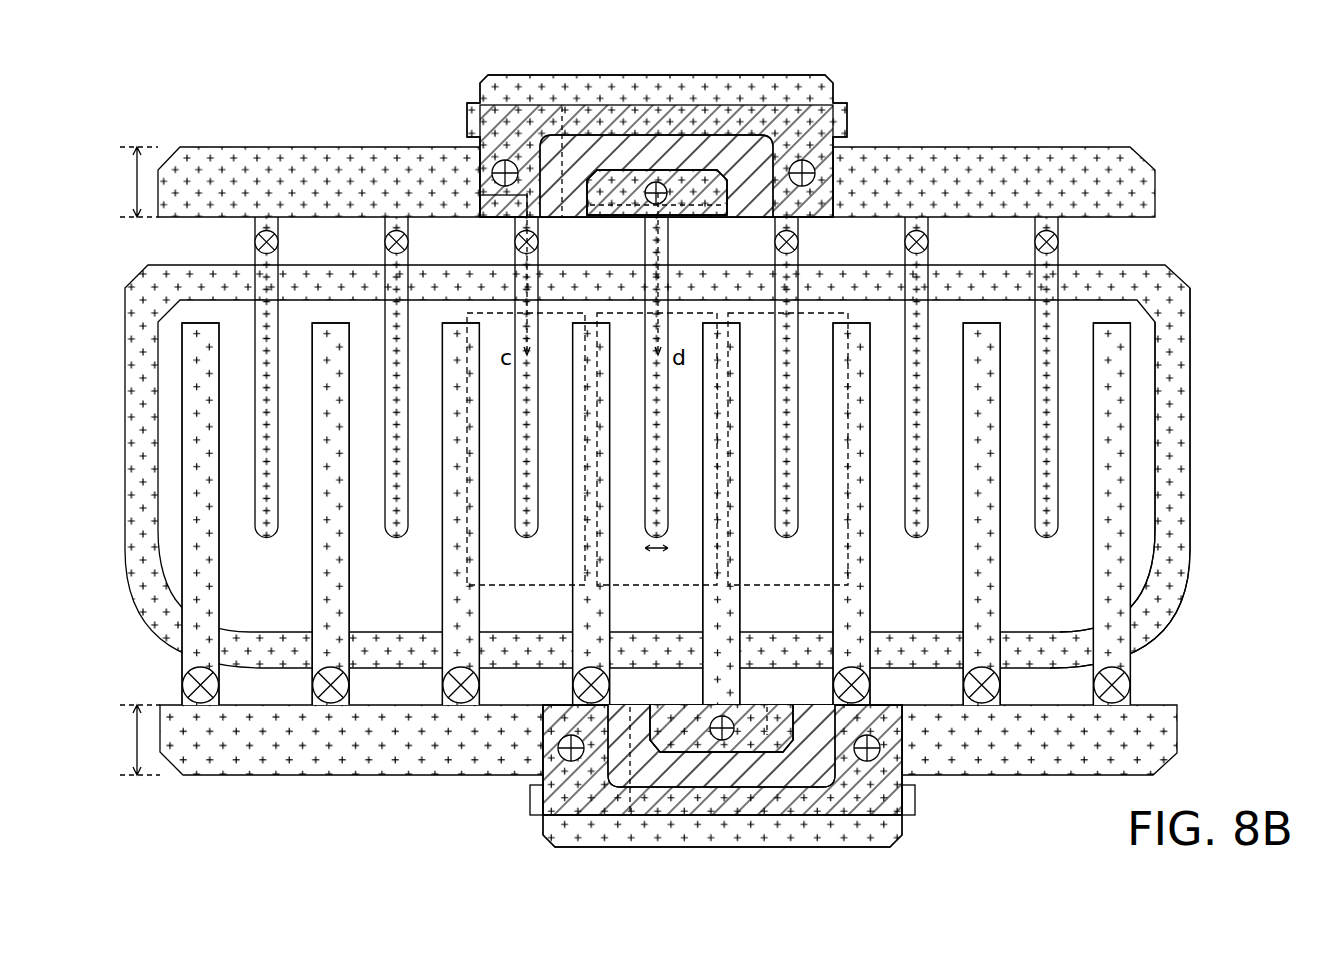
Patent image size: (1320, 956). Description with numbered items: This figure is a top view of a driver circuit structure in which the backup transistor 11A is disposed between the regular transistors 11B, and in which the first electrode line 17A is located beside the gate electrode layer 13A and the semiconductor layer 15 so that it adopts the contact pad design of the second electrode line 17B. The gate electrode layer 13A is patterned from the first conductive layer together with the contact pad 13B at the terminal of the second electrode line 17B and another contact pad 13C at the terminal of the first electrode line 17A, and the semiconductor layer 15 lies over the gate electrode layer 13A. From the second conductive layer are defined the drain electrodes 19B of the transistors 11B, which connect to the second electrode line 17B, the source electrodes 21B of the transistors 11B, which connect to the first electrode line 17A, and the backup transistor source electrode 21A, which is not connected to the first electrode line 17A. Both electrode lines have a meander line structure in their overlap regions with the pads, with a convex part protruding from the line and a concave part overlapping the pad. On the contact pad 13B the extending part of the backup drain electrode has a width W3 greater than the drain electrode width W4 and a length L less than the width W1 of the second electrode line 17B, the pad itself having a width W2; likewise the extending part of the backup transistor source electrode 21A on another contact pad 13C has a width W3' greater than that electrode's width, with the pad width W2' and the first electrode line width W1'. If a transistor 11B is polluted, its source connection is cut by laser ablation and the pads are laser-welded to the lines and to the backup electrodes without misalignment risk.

The backup transistor 11A is at (620, 585).
The transistor 11B is at (485, 585).
The gate electrode layer 13A is at (1190, 308).
The contact pad 13B is at (748, 163).
The another contact pad 13C is at (913, 803).
The semiconductor layer 15 is at (1156, 478).
The first electrode line 17A is at (323, 775).
The second electrode line 17B is at (323, 147).
The drain electrode of the transistor 19B is at (515, 497).
The backup transistor source electrode 21A is at (727, 320).
The source electrode of the transistor 21B is at (855, 323).
The width of the second electrode line W1 is at (122, 182).
The width of the first electrode line W1' is at (123, 740).
The width of the contact pad W2 is at (549, 192).
The width W2' is at (657, 743).
The width of the extending part of the backup transistor drain electrode W3 is at (644, 192).
The width of the extending part of the backup transistor source electrode W3' is at (765, 703).
The width of the backup transistor drain electrode W4 is at (668, 558).
The length of the extending part L is at (683, 177).